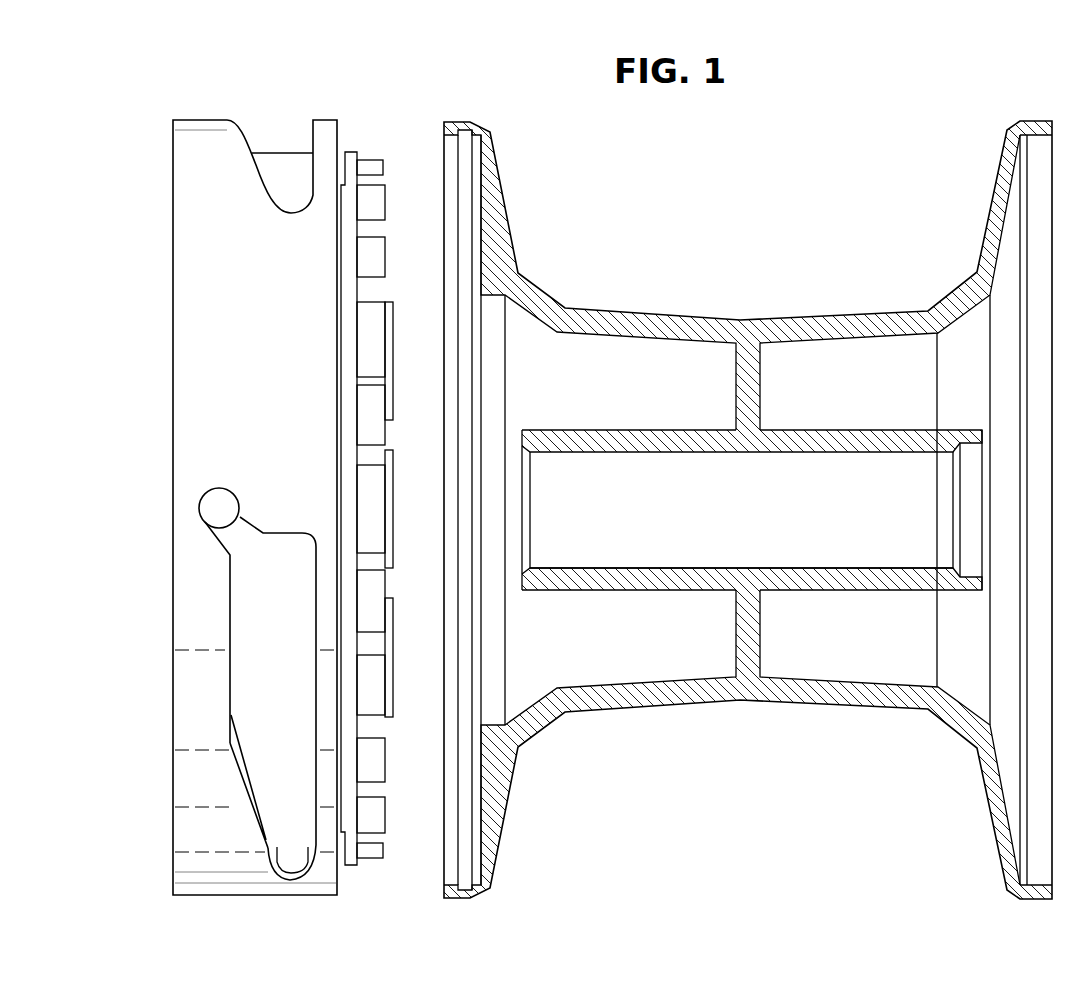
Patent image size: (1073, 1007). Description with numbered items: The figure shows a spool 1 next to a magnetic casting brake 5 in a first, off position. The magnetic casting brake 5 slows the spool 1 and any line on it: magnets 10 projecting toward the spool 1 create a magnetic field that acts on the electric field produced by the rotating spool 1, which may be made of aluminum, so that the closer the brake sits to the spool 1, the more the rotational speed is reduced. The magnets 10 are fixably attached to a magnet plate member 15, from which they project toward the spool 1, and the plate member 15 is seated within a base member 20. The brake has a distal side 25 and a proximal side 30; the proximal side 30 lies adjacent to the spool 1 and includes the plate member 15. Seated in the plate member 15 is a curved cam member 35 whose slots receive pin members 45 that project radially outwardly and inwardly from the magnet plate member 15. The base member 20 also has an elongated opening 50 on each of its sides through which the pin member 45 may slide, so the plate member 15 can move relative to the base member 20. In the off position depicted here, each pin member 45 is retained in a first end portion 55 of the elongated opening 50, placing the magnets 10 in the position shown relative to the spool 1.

The spool 1 is at (838, 190).
The magnetic casting brake 5 is at (165, 115).
The magnets 10 is at (377, 333).
The magnet plate member 15 is at (342, 211).
The base member 20 is at (150, 393).
The distal side 25 is at (191, 706).
The proximal side 30 is at (394, 859).
The curved cam member 35 is at (280, 777).
The pin members 45 is at (217, 503).
The elongated opening 50 is at (268, 743).
The first end portion 55 is at (206, 494).